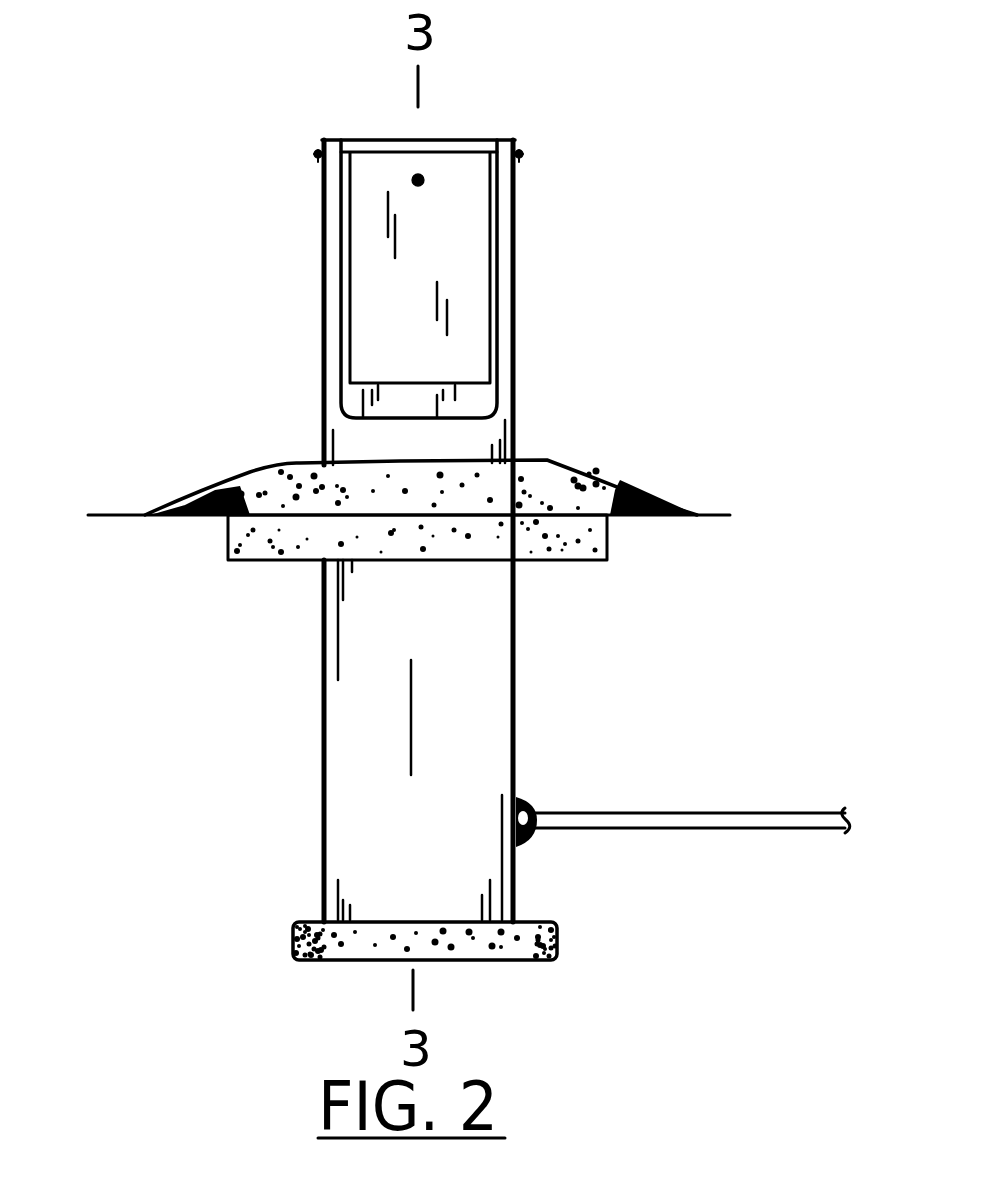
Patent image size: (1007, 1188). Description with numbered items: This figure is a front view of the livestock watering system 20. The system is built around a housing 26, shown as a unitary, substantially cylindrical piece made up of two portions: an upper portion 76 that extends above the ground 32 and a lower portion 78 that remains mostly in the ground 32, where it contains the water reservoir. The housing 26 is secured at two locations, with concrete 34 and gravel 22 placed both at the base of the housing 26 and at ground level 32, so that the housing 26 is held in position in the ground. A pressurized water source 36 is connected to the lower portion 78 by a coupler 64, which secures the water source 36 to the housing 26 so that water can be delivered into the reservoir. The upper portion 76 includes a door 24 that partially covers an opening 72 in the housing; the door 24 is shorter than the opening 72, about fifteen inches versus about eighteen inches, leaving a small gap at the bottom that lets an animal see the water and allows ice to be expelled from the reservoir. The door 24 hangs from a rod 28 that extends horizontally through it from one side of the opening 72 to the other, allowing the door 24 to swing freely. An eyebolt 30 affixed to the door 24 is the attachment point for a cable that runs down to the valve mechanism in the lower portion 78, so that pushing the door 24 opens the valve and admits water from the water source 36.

The livestock watering system 20 is at (552, 254).
The gravel 22 is at (633, 485).
The door 24 is at (427, 165).
The housing 26 is at (515, 412).
The rod 28 is at (522, 153).
The eyebolt 30 is at (414, 176).
The ground 32 is at (130, 513).
The concrete 34 is at (610, 540).
The pressurized water source 36 is at (750, 829).
The coupler 64 is at (524, 796).
The opening 72 is at (410, 405).
The upper portion 76 is at (295, 192).
The lower portion 78 is at (292, 781).